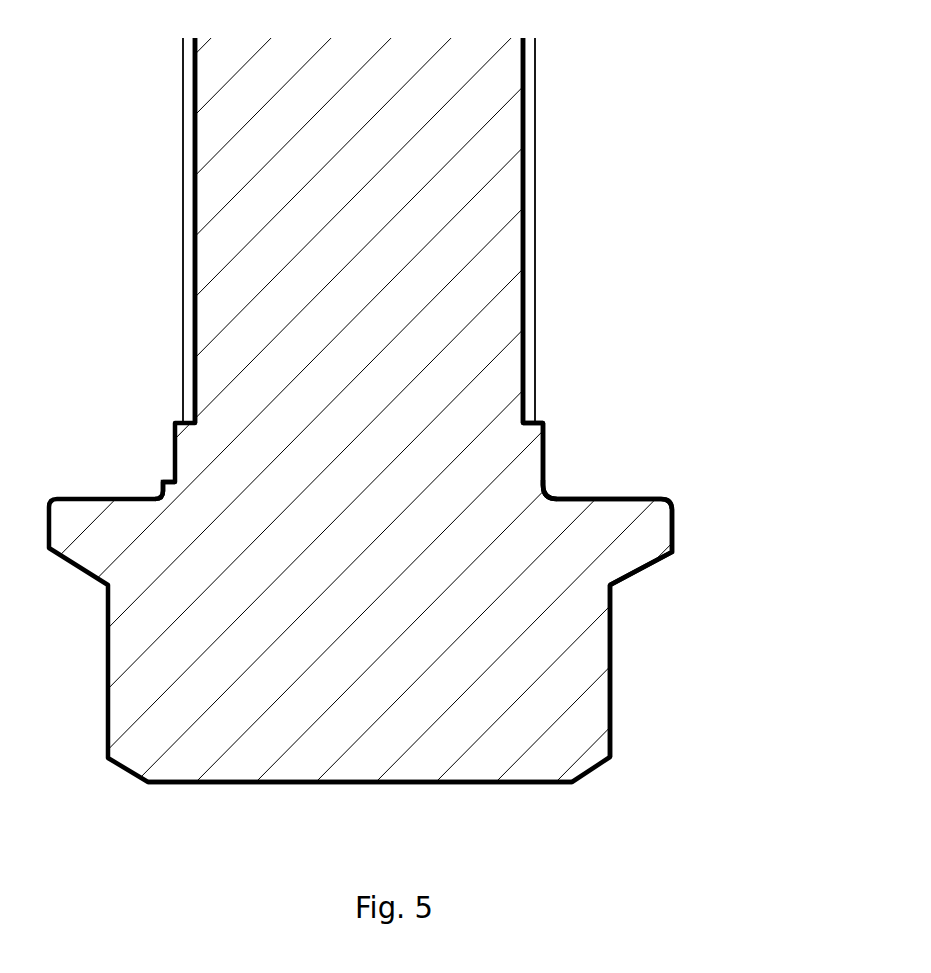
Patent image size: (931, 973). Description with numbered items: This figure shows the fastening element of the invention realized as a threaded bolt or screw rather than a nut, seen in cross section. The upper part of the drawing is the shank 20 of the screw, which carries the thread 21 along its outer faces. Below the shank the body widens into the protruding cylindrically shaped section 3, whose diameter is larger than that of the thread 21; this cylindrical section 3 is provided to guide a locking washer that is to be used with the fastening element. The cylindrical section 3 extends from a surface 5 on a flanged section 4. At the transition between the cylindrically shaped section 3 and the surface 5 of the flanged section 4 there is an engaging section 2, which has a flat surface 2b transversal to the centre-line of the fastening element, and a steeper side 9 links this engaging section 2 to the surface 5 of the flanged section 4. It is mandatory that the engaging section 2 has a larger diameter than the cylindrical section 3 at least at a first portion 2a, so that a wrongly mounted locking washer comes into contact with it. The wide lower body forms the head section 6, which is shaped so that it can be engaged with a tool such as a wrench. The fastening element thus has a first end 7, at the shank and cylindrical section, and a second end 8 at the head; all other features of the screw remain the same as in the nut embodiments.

The engaging section 2 is at (550, 483).
The first portion 2a is at (551, 484).
The flat surface 2b is at (165, 482).
The cylindrically shaped section 3 is at (545, 435).
The flanged section 4 is at (668, 553).
The surface 5 is at (627, 497).
The hexagonal head section 6 is at (612, 662).
The first end 7 is at (597, 25).
The second end 8 is at (451, 833).
The steeper side 9 is at (553, 487).
The shank 20 is at (362, 252).
The thread 21 is at (535, 237).